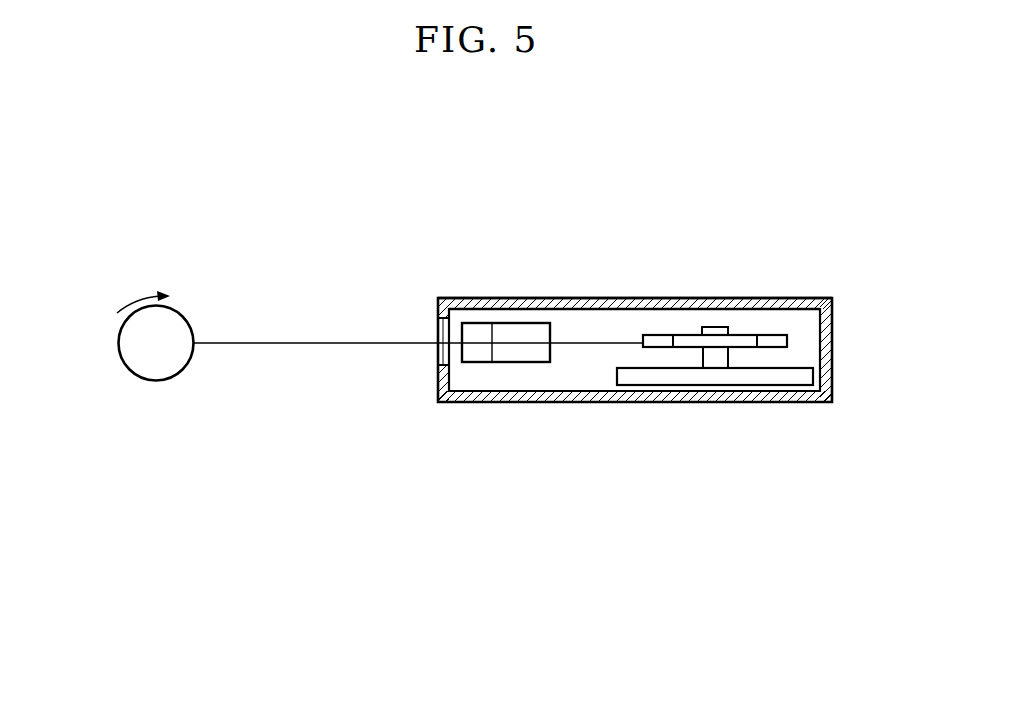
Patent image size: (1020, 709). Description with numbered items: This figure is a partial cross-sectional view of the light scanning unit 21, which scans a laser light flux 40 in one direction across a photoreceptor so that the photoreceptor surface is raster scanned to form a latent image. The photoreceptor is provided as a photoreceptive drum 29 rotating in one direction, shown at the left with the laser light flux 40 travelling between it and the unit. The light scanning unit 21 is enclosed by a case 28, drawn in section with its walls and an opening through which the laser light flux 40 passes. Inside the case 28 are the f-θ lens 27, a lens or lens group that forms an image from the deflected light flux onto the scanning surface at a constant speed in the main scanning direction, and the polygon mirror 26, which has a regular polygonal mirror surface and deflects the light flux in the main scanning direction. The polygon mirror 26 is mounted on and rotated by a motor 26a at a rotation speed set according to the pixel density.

The light scanning unit 21 is at (543, 284).
The polygon mirror 26 is at (787, 343).
The motor 26a is at (815, 383).
The f-θ lens 27 is at (500, 362).
The case 28 is at (765, 298).
The photoreceptive drum 29 is at (118, 344).
The laser light flux 40 is at (288, 356).